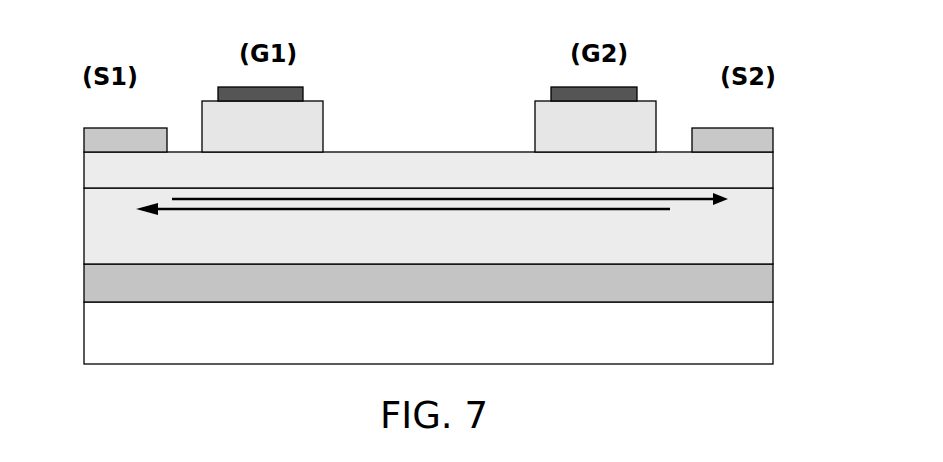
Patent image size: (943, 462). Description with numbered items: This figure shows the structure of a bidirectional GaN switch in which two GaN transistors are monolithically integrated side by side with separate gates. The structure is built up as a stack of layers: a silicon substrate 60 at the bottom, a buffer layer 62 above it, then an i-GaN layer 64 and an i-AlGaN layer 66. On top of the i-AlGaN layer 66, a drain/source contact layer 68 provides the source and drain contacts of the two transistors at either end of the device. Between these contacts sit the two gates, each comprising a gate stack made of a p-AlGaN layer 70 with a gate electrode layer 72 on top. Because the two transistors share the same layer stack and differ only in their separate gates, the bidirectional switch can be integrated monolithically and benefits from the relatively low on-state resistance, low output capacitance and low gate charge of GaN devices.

The silicon substrate 60 is at (773, 338).
The buffer layer 62 is at (773, 280).
The i-GaN layer 64 is at (773, 217).
The i-AlGaN layer 66 is at (773, 162).
The drain/source contact layer 68 is at (84, 135).
The p-AlGaN layer 70 is at (324, 125).
The gate electrode layer 72 is at (302, 87).